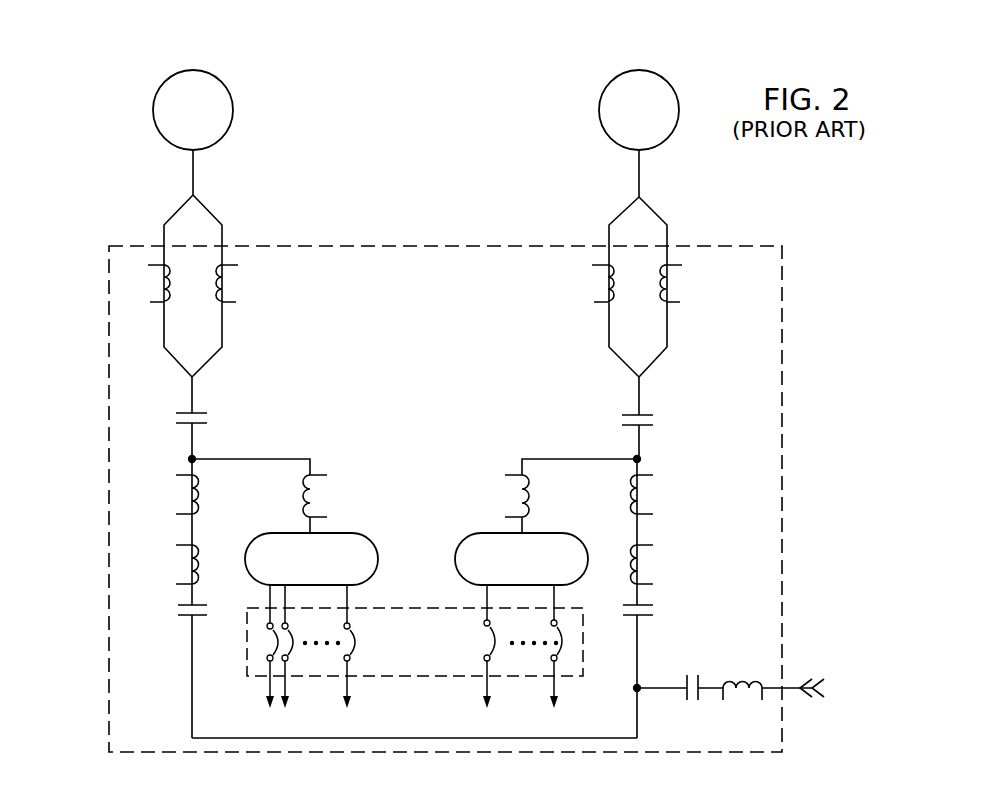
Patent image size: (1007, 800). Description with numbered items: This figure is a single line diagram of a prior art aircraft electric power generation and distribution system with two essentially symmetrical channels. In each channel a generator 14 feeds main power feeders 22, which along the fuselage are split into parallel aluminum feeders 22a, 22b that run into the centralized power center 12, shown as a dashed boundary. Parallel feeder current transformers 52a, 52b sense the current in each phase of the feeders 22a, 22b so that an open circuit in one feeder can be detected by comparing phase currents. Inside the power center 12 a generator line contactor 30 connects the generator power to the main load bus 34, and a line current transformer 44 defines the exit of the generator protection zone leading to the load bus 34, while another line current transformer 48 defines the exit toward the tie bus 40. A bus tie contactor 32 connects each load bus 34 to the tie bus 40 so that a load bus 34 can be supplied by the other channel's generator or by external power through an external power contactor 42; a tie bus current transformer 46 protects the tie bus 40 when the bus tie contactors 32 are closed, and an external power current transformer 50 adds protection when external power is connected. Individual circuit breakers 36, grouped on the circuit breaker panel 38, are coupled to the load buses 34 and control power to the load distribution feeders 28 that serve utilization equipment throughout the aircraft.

The power center 12 is at (424, 316).
The generator 14 is at (154, 100).
The main power feeders 22 is at (195, 164).
The parallel aluminum feeder 22a is at (164, 236).
The parallel aluminum feeder 22b is at (223, 235).
The load distribution feeders 28 is at (242, 698).
The generator line contactor 30 is at (200, 412).
The bus tie contactor 32 is at (197, 617).
The main load bus 34 is at (345, 532).
The individual circuit breakers 36 is at (358, 640).
The circuit breaker panel 38 is at (445, 676).
The tie bus 40 is at (433, 737).
The external power contactor 42 is at (700, 680).
The line current transformer 44 is at (318, 476).
The tie bus current transformer 46 is at (180, 545).
The line current transformer 48 is at (180, 475).
The external power current transformer 50 is at (723, 698).
The parallel feeder current transformer 52a is at (152, 303).
The parallel feeder current transformer 52b is at (236, 303).